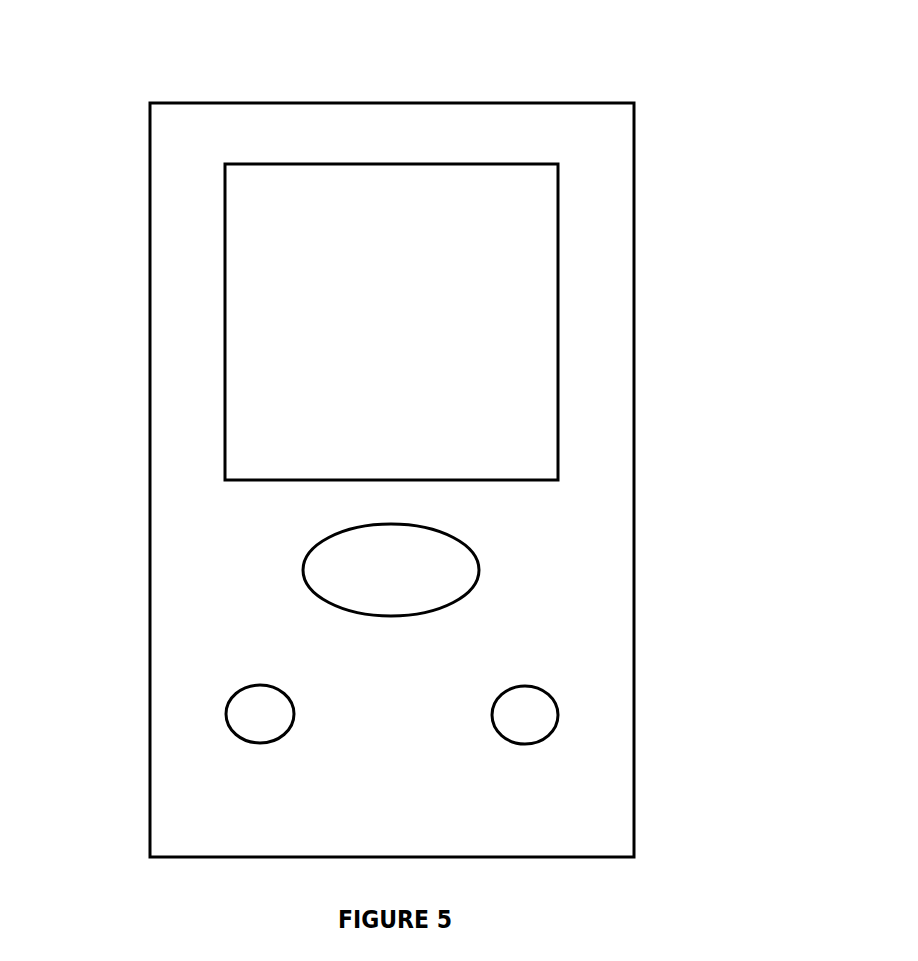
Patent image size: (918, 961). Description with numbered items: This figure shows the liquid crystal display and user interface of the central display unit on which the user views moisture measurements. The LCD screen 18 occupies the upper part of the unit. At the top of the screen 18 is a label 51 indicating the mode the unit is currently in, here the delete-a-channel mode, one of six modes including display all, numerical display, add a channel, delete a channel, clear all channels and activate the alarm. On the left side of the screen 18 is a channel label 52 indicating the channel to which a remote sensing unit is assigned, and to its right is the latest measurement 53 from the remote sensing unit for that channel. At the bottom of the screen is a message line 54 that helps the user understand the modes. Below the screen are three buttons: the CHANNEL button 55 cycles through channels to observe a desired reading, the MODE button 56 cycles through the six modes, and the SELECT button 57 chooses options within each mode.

The LCD screen 18 is at (488, 185).
The label 51 is at (358, 213).
The channel label 52 is at (248, 337).
The latest measurement 53 is at (545, 338).
The message line 54 is at (443, 433).
The CHANNEL button 55 is at (218, 717).
The MODE button 56 is at (565, 722).
The SELECT button 57 is at (480, 553).